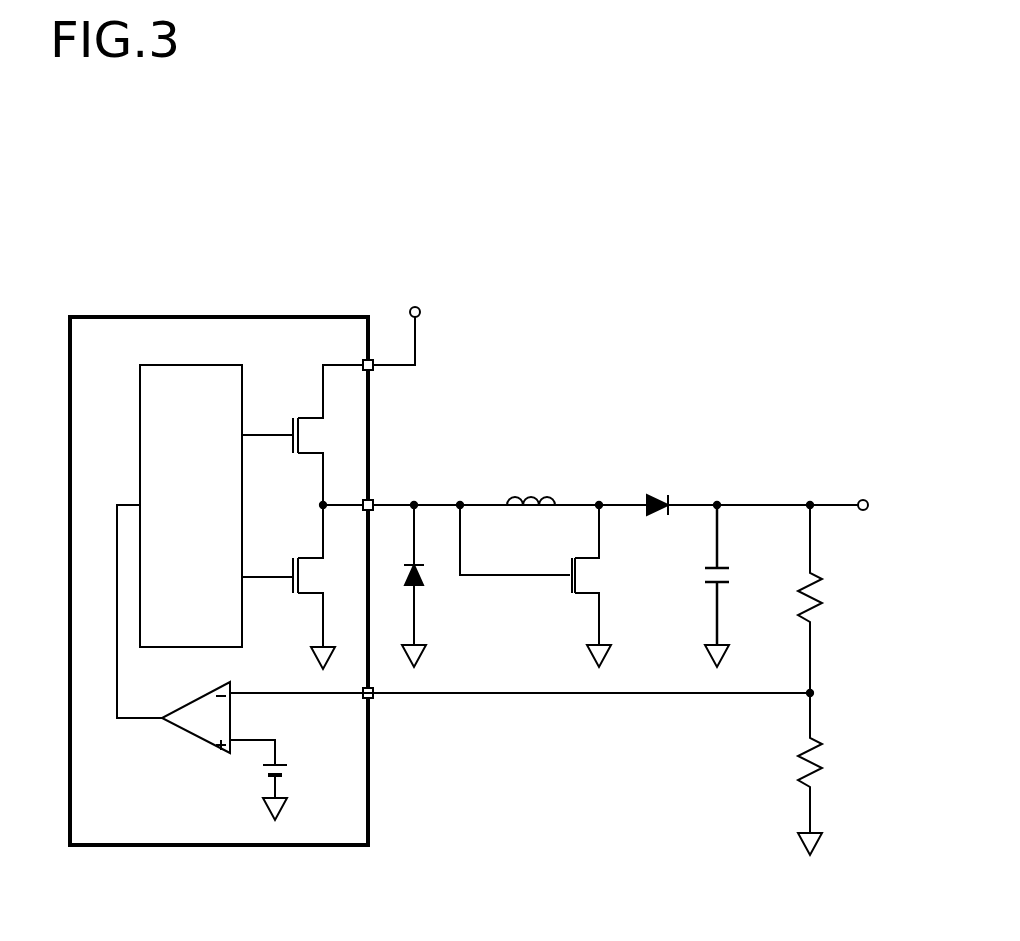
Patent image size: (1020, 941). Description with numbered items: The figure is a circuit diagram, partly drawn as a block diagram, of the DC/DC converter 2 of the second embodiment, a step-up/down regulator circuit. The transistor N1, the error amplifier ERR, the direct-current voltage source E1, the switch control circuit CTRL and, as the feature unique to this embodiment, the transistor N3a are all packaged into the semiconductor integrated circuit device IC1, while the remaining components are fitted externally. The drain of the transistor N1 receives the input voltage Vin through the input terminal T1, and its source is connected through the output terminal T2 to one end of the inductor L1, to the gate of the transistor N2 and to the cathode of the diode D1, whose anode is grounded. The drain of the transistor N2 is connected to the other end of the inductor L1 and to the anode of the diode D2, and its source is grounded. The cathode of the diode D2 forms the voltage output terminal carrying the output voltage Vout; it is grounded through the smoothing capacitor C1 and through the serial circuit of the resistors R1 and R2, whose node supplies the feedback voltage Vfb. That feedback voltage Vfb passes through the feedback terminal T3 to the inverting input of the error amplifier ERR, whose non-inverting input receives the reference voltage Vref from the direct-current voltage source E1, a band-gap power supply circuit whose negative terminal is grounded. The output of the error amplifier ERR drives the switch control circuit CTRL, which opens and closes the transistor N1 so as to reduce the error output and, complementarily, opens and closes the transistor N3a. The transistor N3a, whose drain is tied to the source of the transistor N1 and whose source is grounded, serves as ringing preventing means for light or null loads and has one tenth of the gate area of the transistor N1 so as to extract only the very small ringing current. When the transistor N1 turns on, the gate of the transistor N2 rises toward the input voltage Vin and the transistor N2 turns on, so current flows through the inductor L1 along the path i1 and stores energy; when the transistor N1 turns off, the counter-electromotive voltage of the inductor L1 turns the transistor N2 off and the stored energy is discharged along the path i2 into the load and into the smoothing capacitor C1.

The semiconductor integrated circuit device IC1 is at (220, 317).
The switch control circuit CTRL is at (192, 364).
The N-channel MOS field-effect transistor (first switching means) N1 is at (292, 431).
The N-channel MOS field-effect transistor (third switching means) N3a is at (294, 586).
The input terminal T1 is at (373, 372).
The output terminal T2 is at (373, 498).
The feedback terminal T3 is at (373, 700).
The input voltage Vin is at (403, 323).
The DC/DC converter 2 is at (641, 312).
The diode D1 is at (418, 578).
The inductor L1 is at (530, 486).
The N-channel MOS field-effect transistor (second switching means) N2 is at (572, 590).
The current path i1 is at (483, 517).
The current path i2 is at (438, 580).
The diode D2 is at (656, 495).
The output voltage Vout is at (863, 492).
The smoothing capacitor C1 is at (729, 577).
The resistor R1 is at (823, 600).
The resistor R2 is at (823, 765).
The feedback voltage Vfb is at (522, 682).
The error amplifier ERR is at (199, 694).
The reference voltage Vref is at (264, 740).
The direct-current voltage source E1 is at (290, 773).